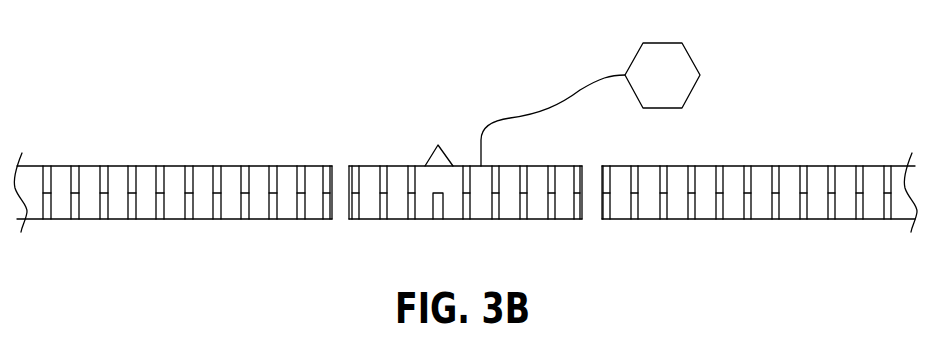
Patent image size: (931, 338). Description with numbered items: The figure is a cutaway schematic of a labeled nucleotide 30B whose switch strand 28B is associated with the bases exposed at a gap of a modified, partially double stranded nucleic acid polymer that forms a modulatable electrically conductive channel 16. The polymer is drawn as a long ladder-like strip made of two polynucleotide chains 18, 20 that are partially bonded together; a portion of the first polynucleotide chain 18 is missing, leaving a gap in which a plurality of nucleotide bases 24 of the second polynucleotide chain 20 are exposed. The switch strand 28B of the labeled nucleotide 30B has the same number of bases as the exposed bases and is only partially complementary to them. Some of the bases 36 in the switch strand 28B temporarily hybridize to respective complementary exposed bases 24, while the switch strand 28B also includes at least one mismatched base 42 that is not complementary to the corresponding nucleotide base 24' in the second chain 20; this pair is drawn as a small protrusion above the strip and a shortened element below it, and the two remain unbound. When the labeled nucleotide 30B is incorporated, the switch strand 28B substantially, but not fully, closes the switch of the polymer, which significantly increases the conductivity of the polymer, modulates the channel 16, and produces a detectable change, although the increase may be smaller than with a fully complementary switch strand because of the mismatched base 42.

The modulatable electrically conductive channel 16 is at (75, 153).
The first polynucleotide chain 18 is at (782, 166).
The second polynucleotide chain 20 is at (787, 219).
The nucleotide bases 24 is at (467, 219).
The corresponding nucleotide base 24' is at (395, 231).
The switch strand 28B is at (395, 166).
The labeled nucleotide 30B is at (697, 54).
The bases 36 is at (527, 183).
The mismatched base 42 is at (445, 153).